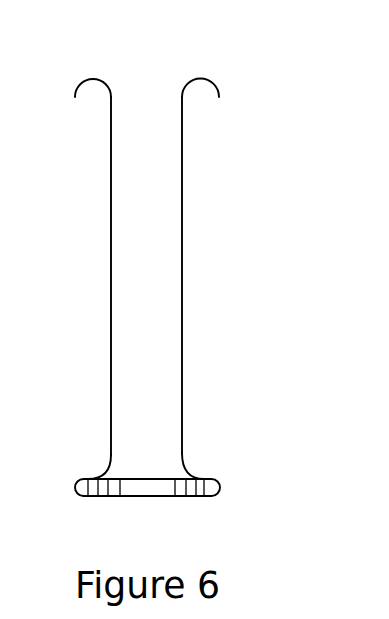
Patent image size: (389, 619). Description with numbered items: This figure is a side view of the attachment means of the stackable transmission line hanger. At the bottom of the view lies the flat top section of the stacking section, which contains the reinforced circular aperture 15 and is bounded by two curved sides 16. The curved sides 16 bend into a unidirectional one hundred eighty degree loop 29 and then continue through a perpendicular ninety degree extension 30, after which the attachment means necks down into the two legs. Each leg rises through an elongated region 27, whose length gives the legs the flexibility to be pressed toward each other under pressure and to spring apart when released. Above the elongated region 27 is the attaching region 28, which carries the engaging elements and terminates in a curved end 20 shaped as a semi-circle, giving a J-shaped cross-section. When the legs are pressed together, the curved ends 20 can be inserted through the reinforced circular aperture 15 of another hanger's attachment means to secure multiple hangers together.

The reinforced circular aperture 15 is at (110, 487).
The curved sides 16 is at (238, 438).
The curved end 20 is at (200, 78).
The elongated region 27 is at (242, 140).
The attaching region 28 is at (223, 77).
The one hundred eighty degree loop 29 is at (75, 481).
The ninety degree extension 30 is at (103, 472).